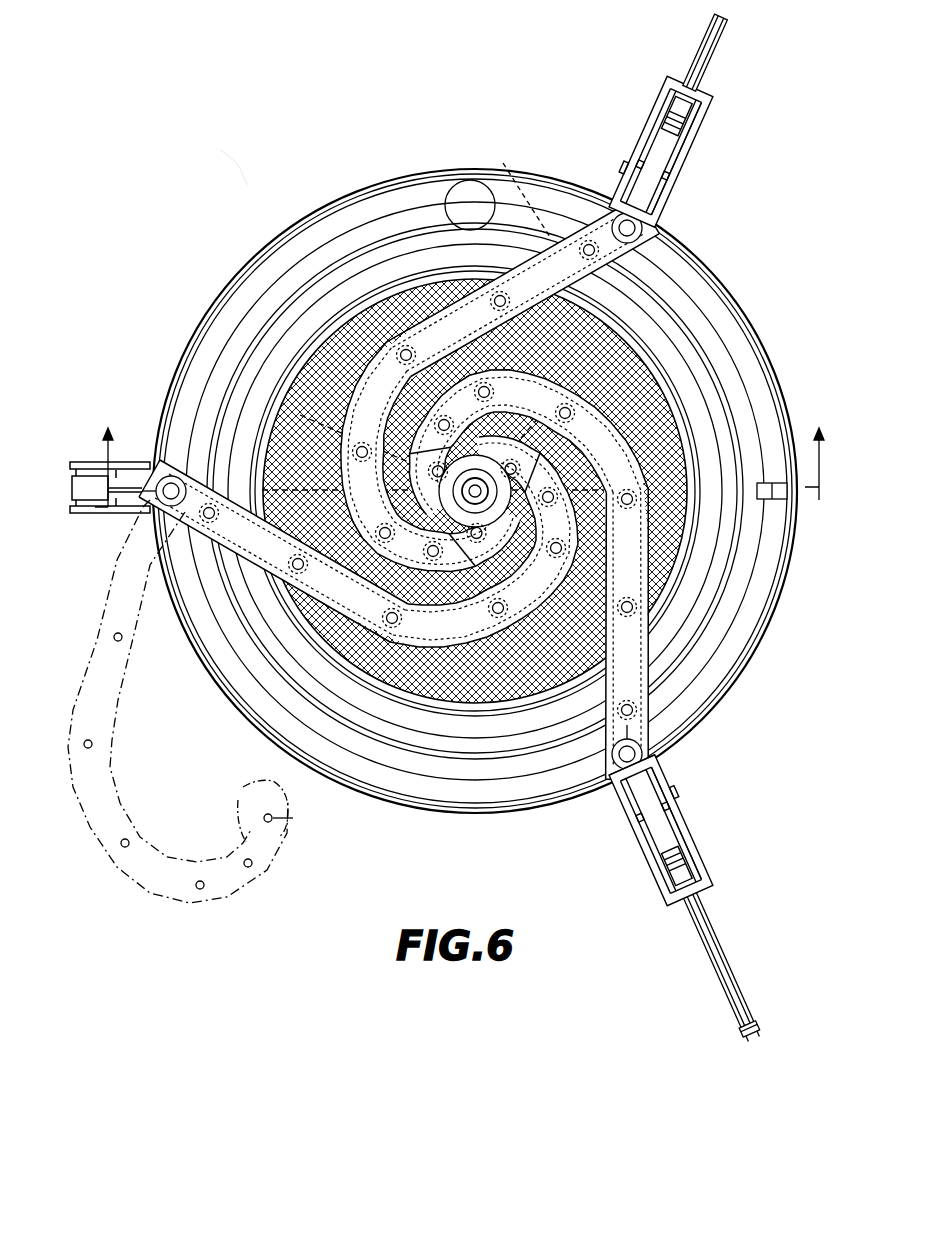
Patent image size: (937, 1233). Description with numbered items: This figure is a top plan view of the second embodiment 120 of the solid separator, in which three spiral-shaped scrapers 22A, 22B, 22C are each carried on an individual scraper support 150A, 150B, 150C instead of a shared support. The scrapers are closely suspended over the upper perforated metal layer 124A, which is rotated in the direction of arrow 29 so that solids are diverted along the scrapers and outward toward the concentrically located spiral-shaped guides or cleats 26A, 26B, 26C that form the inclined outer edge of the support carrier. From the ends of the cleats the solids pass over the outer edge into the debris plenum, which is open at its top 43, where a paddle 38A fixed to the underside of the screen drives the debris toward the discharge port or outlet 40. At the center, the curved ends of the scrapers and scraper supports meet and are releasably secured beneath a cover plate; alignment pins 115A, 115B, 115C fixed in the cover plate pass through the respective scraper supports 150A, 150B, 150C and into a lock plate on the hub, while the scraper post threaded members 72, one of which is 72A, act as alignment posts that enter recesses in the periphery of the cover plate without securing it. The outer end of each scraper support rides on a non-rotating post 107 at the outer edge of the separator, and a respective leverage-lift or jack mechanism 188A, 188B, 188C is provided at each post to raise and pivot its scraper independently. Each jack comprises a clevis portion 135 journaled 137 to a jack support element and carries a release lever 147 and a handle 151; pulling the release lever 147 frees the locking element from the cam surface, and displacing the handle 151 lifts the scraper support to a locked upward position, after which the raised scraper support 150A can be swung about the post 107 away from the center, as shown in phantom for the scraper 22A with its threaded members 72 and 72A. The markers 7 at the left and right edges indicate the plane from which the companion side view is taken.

The second embodiment of the solid separator 120 is at (244, 180).
The upper perforated metal layer 124A is at (345, 318).
The spiral-shaped guide or cleat 26A is at (383, 268).
The spiral-shaped guide or cleat 26B is at (672, 306).
The spiral-shaped guide or cleat 26C is at (676, 360).
The discharge port or outlet 40 is at (466, 180).
The top of debris plenum 43 is at (543, 158).
The spiral-shaped scraper 22A is at (312, 640).
The spiral-shaped scraper 22B is at (514, 458).
The spiral-shaped scraper 22C is at (426, 473).
The scraper support 150A is at (222, 478).
The scraper support 150B is at (577, 567).
The scraper support 150C is at (489, 365).
The alignment pin 115A is at (537, 425).
The alignment pin 115B is at (430, 450).
The alignment pin 115C is at (462, 550).
The scraper post threaded member 72 is at (497, 293).
The scraper post threaded member 72A is at (300, 813).
The non-rotating post 107 is at (163, 476).
The leverage-lift or jack mechanism 188A is at (116, 446).
The leverage-lift or jack mechanism 188B is at (722, 830).
The leverage-lift or jack mechanism 188C is at (718, 128).
The clevis portion 135 is at (648, 752).
The journal 137 is at (618, 152).
The handle 151 is at (705, 62).
The release lever 147 is at (755, 1042).
The paddle 38A is at (780, 472).
The arrow indicating screen rotation direction 29 is at (744, 598).
The section line 7- 7 is at (462, 477).